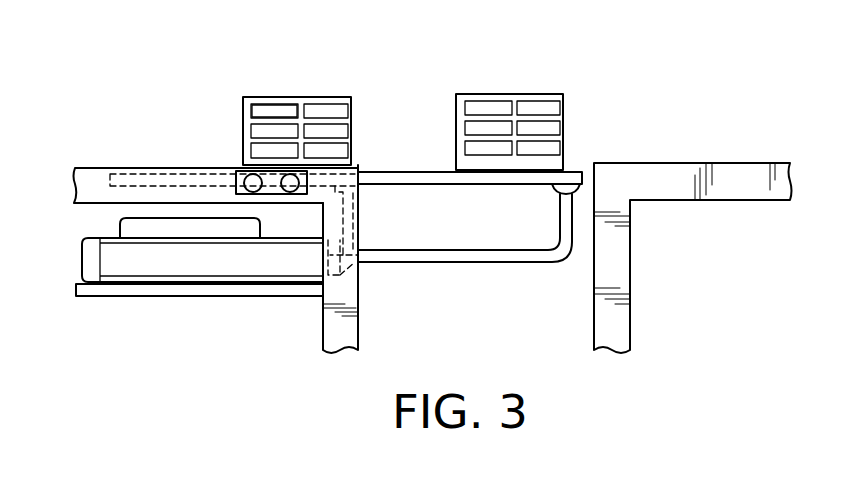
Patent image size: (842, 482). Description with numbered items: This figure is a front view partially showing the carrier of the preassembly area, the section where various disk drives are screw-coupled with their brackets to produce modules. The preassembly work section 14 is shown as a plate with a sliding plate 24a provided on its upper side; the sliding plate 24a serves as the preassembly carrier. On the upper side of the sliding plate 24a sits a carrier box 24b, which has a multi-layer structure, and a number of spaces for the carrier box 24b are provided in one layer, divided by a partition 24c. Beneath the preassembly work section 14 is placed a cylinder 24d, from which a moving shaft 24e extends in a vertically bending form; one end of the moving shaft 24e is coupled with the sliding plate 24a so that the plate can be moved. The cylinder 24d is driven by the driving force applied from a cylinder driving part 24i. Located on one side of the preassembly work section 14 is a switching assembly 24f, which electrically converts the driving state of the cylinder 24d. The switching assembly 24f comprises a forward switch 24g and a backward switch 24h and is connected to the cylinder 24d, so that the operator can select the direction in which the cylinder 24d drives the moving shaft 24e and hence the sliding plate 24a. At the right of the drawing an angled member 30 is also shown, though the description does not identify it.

The preassembly work section 14 is at (92, 173).
The sliding plate 24a is at (146, 174).
The carrier box 24b is at (332, 97).
The partition 24c is at (295, 110).
The cylinder 24d is at (163, 275).
The moving shaft 24e is at (363, 212).
The switching assembly 24f is at (233, 176).
The forward switch 24g is at (290, 192).
The backward switch 24h is at (252, 192).
The cylinder driving part 24i is at (125, 232).
The frame 30 is at (620, 268).